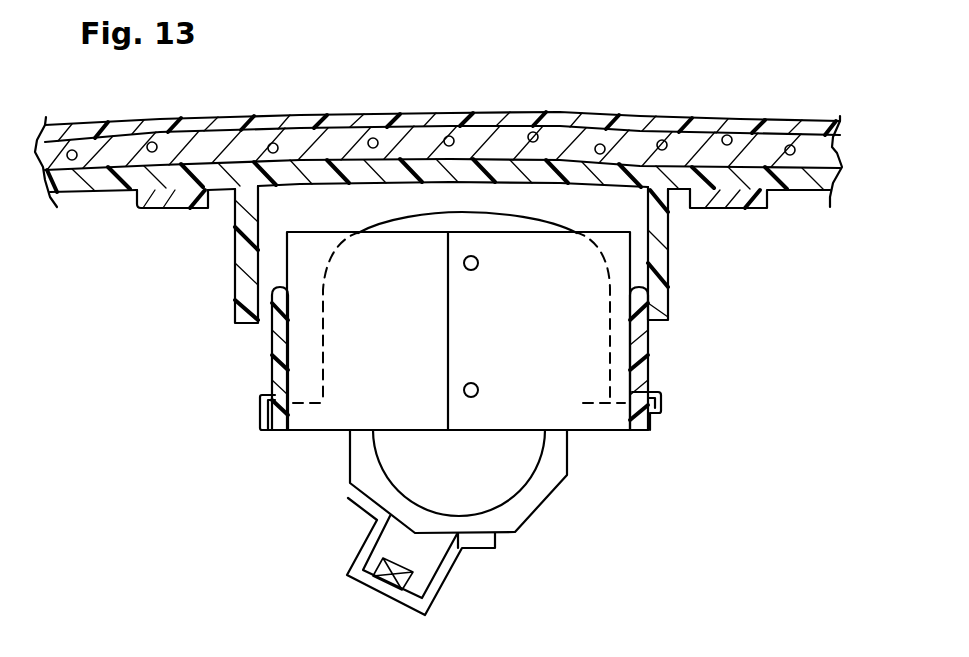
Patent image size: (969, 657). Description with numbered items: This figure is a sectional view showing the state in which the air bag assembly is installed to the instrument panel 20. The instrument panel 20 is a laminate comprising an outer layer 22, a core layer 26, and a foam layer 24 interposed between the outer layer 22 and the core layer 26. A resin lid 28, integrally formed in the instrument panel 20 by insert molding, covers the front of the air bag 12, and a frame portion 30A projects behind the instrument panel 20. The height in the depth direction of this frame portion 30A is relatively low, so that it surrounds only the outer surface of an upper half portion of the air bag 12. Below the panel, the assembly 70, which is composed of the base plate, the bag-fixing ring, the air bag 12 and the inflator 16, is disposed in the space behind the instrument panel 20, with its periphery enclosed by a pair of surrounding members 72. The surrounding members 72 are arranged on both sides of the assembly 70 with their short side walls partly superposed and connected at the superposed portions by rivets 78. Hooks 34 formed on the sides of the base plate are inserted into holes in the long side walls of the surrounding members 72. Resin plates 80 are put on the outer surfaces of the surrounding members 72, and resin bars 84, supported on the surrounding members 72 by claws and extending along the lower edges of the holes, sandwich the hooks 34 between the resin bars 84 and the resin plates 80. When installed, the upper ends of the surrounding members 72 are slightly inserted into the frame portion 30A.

The air bag 12 is at (530, 216).
The inflator 16 is at (487, 495).
The instrument panel 20 is at (847, 78).
The outer layer 22 is at (798, 128).
The foam layer 24 is at (783, 147).
The core layer 26 is at (783, 177).
The resin lid 28 is at (220, 200).
The frame portion 30A is at (668, 265).
The hook 34 is at (258, 408).
The assembly 70 is at (342, 466).
The surrounding member 72 is at (305, 252).
The rivet 78 is at (478, 263).
The resin plate 80 is at (270, 355).
The resin bar 84 is at (277, 430).